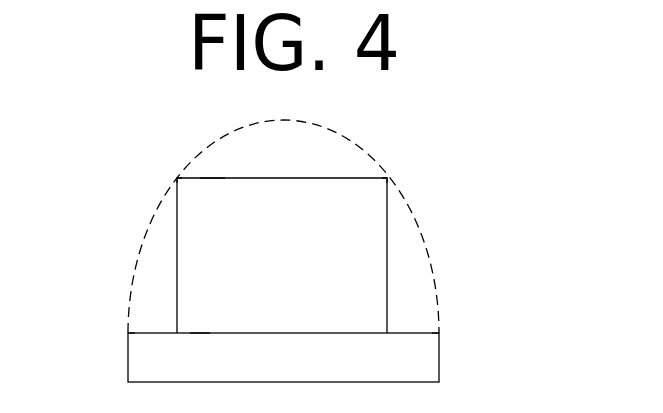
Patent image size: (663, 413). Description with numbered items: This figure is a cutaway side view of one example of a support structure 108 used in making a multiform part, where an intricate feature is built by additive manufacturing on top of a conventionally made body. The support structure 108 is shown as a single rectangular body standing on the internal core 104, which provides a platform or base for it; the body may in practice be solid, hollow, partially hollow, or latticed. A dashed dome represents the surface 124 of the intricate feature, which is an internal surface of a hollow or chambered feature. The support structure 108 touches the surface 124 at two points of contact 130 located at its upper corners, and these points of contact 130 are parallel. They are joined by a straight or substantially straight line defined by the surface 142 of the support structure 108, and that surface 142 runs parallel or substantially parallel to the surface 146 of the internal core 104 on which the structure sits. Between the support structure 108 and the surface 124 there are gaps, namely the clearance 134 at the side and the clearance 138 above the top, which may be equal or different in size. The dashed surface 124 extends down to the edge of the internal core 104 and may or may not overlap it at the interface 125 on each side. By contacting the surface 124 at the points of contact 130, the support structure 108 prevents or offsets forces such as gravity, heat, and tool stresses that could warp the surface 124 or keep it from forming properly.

The internal core 104 is at (297, 366).
The support structure 108 is at (297, 265).
The surface 124 is at (138, 258).
The interface 125 is at (127, 334).
The points of contact 130 is at (176, 177).
The clearance 134 is at (429, 263).
The clearance 138 is at (280, 120).
The surface 142 is at (214, 176).
The surface 146 is at (200, 331).